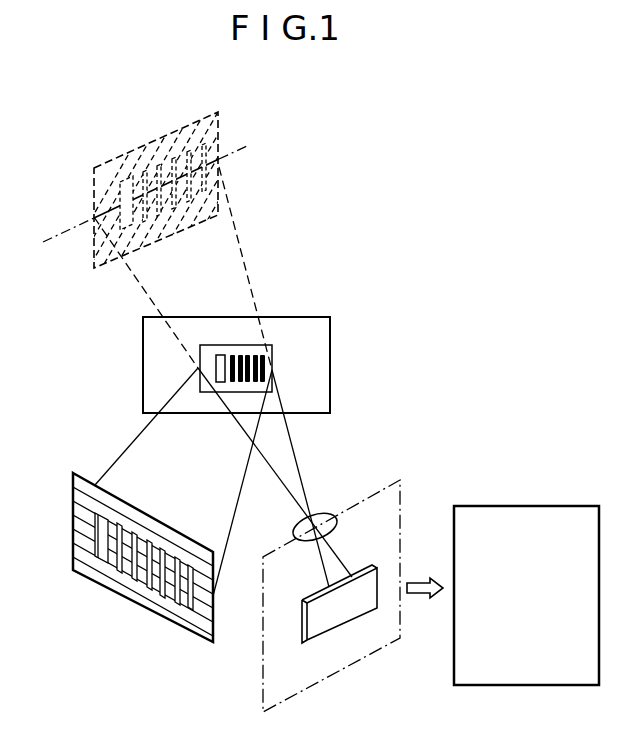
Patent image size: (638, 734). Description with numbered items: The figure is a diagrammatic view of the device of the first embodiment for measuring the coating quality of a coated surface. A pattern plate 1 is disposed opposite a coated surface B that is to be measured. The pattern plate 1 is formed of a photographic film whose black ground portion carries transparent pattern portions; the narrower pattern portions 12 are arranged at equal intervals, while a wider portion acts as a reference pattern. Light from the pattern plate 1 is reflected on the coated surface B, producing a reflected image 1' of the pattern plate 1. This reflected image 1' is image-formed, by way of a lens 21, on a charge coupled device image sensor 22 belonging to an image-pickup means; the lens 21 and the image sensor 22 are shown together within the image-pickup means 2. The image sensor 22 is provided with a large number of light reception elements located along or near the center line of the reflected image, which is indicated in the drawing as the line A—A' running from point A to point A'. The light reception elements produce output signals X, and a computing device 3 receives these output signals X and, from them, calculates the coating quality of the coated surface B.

The pattern plate 1 is at (159, 557).
The reflected image 1' is at (183, 184).
The pattern portions 12 is at (150, 520).
The movable detection unit 2 is at (332, 588).
The lens 21 is at (322, 518).
The charge coupled device image sensor 22 is at (315, 620).
The computing device 3 is at (533, 512).
The center line end point A is at (132, 204).
The center line end point A' is at (259, 149).
The coated surface B is at (330, 318).
The output signals X is at (425, 571).